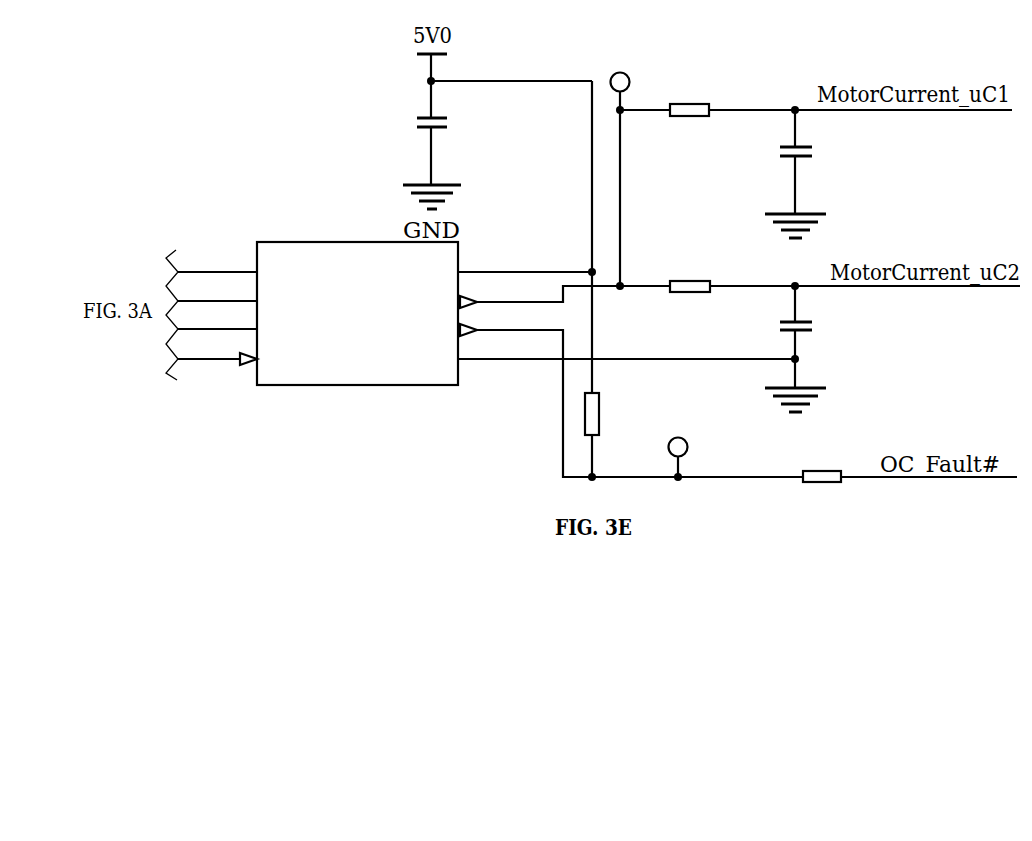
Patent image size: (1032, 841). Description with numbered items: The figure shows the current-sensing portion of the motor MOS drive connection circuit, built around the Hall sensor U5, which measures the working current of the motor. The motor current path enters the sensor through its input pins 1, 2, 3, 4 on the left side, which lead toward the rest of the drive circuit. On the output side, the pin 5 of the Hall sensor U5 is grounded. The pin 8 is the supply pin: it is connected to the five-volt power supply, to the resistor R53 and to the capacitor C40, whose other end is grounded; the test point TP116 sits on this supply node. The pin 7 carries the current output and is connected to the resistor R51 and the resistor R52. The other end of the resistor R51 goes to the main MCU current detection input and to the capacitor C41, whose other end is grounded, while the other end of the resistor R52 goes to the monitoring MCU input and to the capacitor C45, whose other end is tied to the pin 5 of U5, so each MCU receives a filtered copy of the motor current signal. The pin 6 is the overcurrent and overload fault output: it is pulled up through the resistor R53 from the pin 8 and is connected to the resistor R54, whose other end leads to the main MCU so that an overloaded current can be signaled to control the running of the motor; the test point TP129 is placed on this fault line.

The Hall sensor U5 is at (357, 313).
The capacitor C40 is at (496, 145).
The capacitor C41 is at (872, 189).
The capacitor C45 is at (872, 365).
The resistor R51 is at (707, 107).
The resistor R52 is at (707, 284).
The resistor R53 is at (667, 414).
The resistor R54 is at (908, 474).
The test point TP116 is at (617, 75).
The test point TP129 is at (712, 455).
The U5 pin 1 IP+ 1 is at (217, 261).
The U5 pin 2 IP+ 2 is at (217, 290).
The U5 pin 3 IP- 3 is at (217, 318).
The U5 pin 4 IP- 4 is at (217, 350).
The pin 5 of the Hall sensor 5 is at (626, 346).
The pin 6 of the Hall sensor 6 is at (631, 391).
The pin 7 of the Hall sensor 7 is at (565, 292).
The pin 8 of the Hall sensor 8 is at (525, 260).